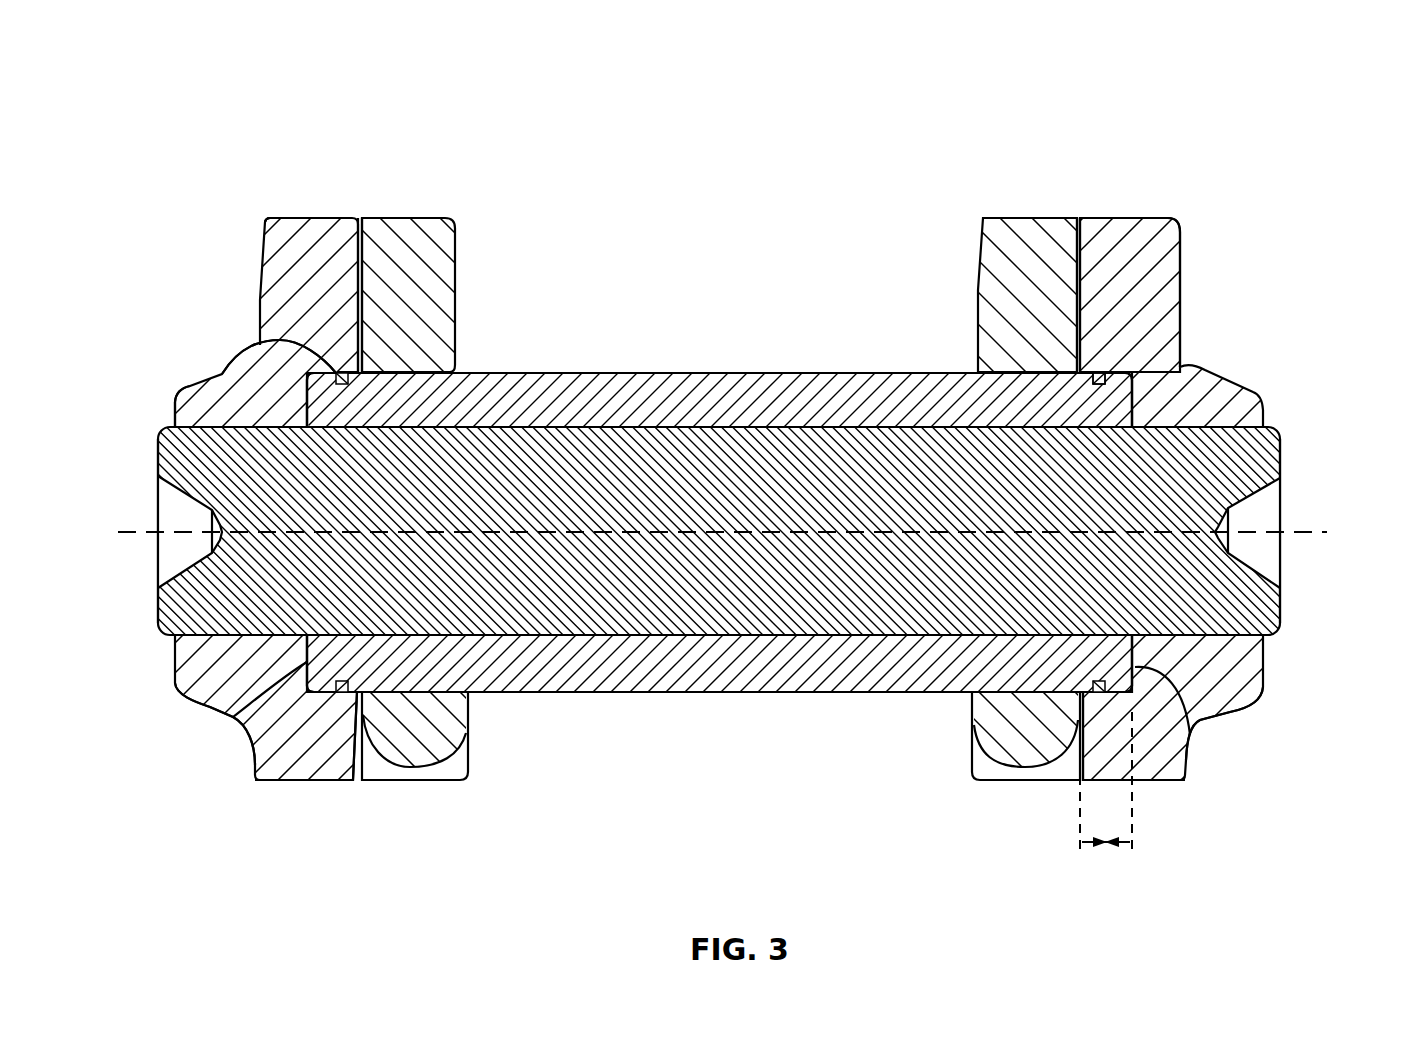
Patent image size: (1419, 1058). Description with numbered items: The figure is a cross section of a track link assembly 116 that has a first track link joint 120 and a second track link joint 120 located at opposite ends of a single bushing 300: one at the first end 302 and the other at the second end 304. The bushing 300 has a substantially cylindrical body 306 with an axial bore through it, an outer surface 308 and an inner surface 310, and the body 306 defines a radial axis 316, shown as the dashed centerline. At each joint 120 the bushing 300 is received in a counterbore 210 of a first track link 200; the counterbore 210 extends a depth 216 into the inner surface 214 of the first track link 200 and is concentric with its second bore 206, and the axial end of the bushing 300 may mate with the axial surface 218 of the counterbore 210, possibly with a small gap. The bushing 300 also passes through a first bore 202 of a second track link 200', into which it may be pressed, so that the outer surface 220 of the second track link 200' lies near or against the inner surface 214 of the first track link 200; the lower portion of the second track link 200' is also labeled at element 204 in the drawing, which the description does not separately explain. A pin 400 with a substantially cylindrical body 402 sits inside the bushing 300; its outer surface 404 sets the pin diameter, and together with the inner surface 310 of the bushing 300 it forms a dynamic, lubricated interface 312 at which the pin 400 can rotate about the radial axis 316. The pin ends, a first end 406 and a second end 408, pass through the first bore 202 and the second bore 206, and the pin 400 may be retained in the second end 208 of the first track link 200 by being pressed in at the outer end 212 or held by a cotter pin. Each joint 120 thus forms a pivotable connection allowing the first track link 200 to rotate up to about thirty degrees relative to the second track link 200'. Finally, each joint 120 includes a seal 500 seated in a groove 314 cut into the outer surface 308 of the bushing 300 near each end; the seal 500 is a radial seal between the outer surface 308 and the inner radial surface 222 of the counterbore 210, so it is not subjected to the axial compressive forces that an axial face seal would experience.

The track link assembly 116 is at (250, 74).
The track link joint 120 is at (322, 154).
The first track link 200 is at (718, 265).
The second track link 200' is at (719, 265).
The first bore 202 is at (972, 372).
The lower nut 204 is at (413, 782).
The second bore 206 is at (1272, 640).
The second end 208 is at (295, 782).
The counterbore 210 is at (1103, 382).
The outer end 212 is at (177, 390).
The inner surface 214 is at (1078, 250).
The depth 216 is at (1107, 845).
The axial surface 218 is at (1127, 388).
The outer surface 220 is at (1075, 268).
The inner radial surface 222 is at (1108, 372).
The bushing 300 is at (715, 390).
The first end 302 is at (233, 717).
The second end 304 is at (1190, 740).
The body 306 is at (533, 388).
The outer surface 308 is at (630, 373).
The inner surface 310 is at (723, 640).
The interface 312 is at (862, 420).
The groove 314 is at (345, 376).
The radial axis 316 is at (1318, 532).
The pin 400 is at (719, 531).
The body 402 is at (1240, 455).
The outer surface 404 is at (235, 425).
The first end 406 is at (1282, 598).
The second end 408 is at (158, 603).
The seal 500 is at (257, 349).